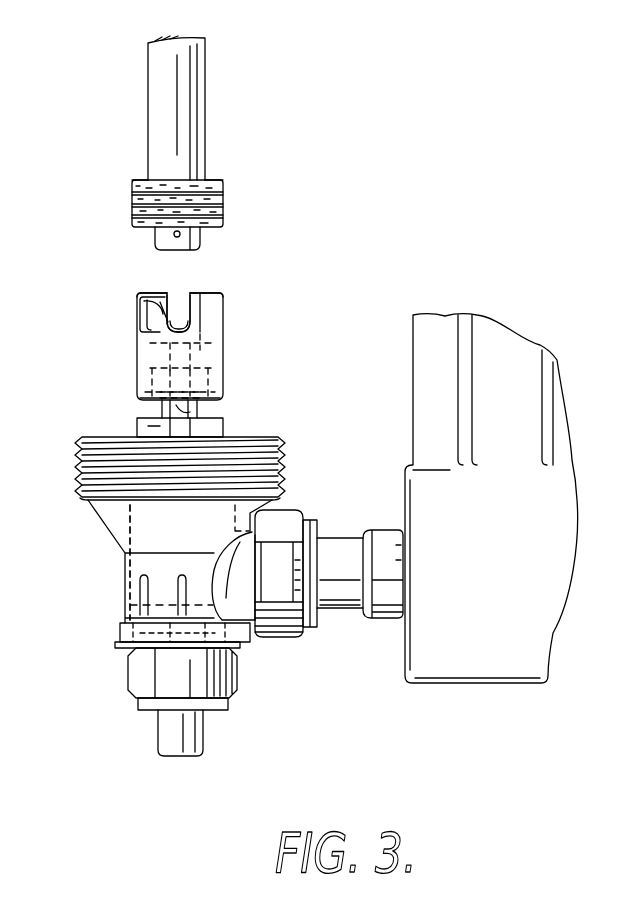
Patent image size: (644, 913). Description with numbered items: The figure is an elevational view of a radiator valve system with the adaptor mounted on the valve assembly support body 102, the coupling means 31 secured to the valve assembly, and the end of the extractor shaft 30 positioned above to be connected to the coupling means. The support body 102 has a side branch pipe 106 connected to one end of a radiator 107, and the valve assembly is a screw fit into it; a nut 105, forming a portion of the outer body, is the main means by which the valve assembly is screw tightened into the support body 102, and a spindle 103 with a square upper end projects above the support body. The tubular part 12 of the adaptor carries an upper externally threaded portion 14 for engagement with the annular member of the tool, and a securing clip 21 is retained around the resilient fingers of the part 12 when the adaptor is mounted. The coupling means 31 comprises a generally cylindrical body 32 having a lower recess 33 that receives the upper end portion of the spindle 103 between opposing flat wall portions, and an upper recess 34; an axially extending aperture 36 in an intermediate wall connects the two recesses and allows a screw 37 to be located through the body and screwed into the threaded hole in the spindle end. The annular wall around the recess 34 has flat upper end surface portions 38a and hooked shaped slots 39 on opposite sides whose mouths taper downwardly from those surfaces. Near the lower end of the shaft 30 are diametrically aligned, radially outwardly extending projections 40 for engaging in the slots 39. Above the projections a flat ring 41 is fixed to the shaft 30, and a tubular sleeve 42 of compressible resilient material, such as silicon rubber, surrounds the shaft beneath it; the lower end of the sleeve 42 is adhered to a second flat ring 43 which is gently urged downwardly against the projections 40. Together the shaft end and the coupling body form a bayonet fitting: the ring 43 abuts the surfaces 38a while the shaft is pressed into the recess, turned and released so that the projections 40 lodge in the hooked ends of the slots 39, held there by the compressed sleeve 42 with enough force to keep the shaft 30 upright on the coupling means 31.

The shaft 30 is at (160, 101).
The flat ring 41 is at (207, 183).
The tubular sleeve 42 is at (222, 193).
The projections 40 is at (217, 233).
The second flat ring 43 is at (155, 234).
The recess 34 is at (182, 300).
The flat upper end surface portions 38a is at (150, 292).
The coupling means 31 is at (138, 345).
The hooked shaped slots 39 is at (183, 326).
The screw 37 is at (185, 347).
The axially extending aperture 36 is at (178, 353).
The cylindrical body 32 is at (224, 386).
The recess 33 is at (155, 386).
The spindle 103 is at (193, 420).
The nut 105 is at (140, 436).
The externally threaded portion 14 is at (80, 468).
The tubular part 12 is at (106, 537).
The support body 102 is at (125, 543).
The securing clip 21 is at (120, 632).
The side branch pipe 106 is at (242, 598).
The radiator 107 is at (470, 655).